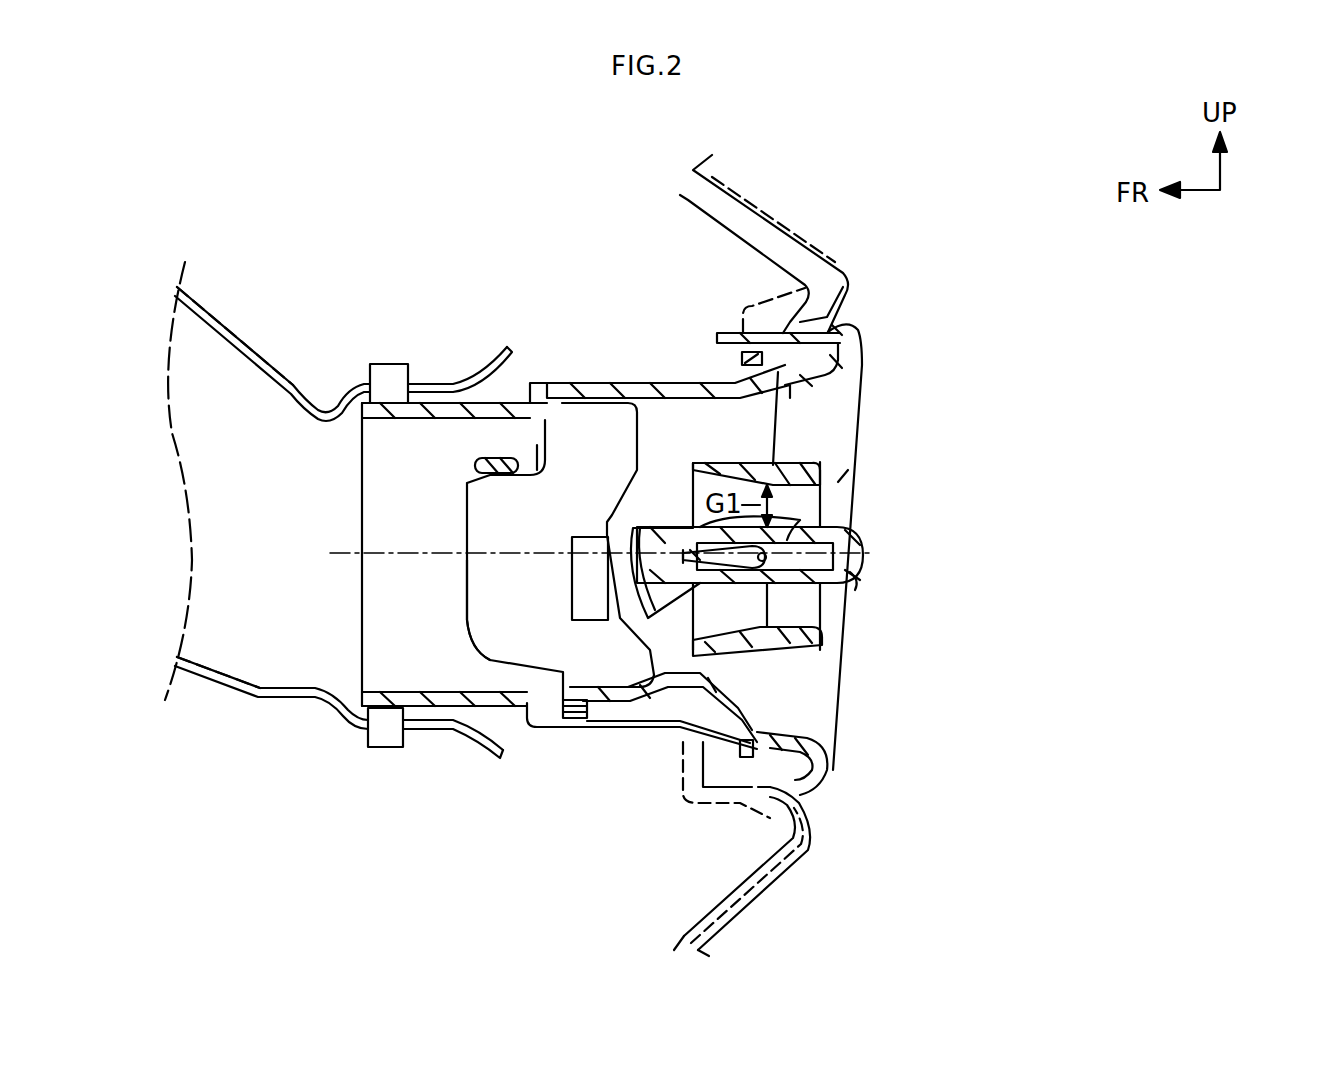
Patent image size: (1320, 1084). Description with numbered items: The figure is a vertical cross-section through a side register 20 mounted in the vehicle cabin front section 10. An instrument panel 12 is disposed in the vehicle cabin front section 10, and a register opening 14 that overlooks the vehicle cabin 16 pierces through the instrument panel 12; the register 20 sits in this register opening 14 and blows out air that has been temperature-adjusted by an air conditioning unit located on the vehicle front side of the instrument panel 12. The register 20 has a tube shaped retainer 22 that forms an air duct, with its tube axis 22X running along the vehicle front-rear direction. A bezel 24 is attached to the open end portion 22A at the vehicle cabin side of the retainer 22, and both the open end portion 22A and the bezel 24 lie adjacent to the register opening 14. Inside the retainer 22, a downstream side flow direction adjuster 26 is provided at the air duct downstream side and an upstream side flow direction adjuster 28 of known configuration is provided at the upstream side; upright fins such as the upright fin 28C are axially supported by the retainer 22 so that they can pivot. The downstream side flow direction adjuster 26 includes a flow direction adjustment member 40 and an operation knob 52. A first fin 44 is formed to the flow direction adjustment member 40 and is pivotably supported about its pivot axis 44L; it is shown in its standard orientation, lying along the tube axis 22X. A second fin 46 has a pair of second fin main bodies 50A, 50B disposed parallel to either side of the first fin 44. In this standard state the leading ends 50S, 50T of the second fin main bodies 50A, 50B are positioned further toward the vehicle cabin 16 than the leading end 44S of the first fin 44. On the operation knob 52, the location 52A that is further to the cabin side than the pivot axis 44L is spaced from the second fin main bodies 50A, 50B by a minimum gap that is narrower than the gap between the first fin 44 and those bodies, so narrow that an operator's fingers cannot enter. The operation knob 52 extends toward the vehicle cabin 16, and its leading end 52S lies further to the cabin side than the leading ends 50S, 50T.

The vehicle cabin front section 10 is at (965, 188).
The instrument panel 12 is at (805, 228).
The register opening 14 is at (840, 330).
The vehicle cabin 16 is at (1082, 311).
The register 20 is at (910, 395).
The retainer 22 is at (620, 368).
The open end portion 22A is at (780, 390).
The tube axis 22X is at (413, 548).
The bezel 24 is at (866, 345).
The downstream side flow direction adjuster 26 is at (716, 415).
The upstream side flow direction adjuster 28 is at (520, 443).
The upright fin 28C is at (467, 615).
The flow direction adjustment member 40 is at (812, 452).
The first fin 44 is at (772, 548).
The pivot axis 44L is at (770, 572).
The leading end 44S is at (812, 615).
The second fin 46 is at (838, 482).
The second fin main body 50A is at (797, 466).
The second fin main body 50B is at (795, 652).
The leading end 50S is at (832, 470).
The leading end 50T is at (836, 655).
The operation knob 52 is at (868, 547).
The location 52A is at (805, 522).
The leading end 52S is at (860, 575).